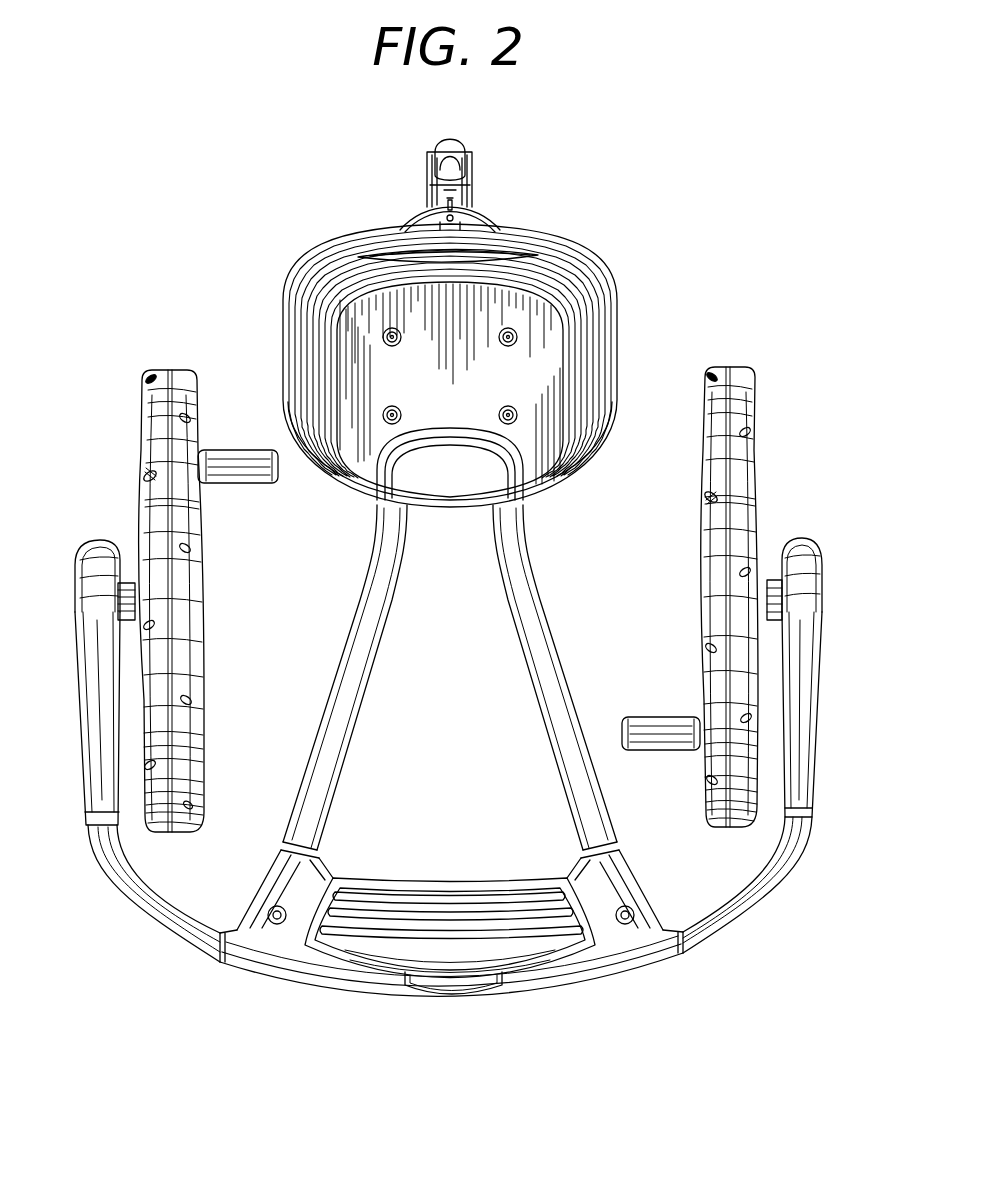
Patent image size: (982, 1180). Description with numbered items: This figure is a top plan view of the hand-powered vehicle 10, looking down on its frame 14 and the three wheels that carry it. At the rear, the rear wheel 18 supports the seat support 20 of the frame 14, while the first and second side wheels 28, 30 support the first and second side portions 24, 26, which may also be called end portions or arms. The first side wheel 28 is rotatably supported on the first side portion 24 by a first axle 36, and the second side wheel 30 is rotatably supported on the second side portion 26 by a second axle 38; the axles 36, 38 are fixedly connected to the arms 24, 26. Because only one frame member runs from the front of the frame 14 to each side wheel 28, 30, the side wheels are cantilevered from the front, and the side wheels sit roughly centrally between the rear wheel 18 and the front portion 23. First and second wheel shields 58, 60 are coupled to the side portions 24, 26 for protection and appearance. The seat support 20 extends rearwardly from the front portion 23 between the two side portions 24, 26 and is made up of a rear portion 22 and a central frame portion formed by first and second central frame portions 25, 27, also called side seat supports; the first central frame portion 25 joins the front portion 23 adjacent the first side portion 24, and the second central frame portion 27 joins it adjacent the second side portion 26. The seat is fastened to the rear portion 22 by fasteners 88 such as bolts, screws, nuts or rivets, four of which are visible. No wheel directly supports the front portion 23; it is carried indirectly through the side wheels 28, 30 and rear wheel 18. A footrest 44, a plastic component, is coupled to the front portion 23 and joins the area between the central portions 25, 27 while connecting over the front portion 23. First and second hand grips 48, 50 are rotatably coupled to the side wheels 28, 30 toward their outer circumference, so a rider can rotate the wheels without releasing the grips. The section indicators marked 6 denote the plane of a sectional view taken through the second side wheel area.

The hand-powered vehicle 10 is at (314, 168).
The frame 14 is at (767, 914).
The rear wheel 18 is at (458, 138).
The seat support 20 is at (450, 681).
The rear portion 22 is at (483, 209).
The front portion 23 is at (318, 986).
The first side portion 24 is at (80, 600).
The first central frame portion 25 is at (330, 766).
The second side portion 26 is at (825, 591).
The second central frame portion 27 is at (573, 782).
The first side wheel 28 is at (172, 369).
The second side wheel 30 is at (722, 366).
The first axle 36 is at (128, 582).
The second axle 38 is at (773, 579).
The footrest 44 is at (518, 938).
The first hand grip 48 is at (258, 449).
The second hand grip 50 is at (663, 717).
The first wheel shield 58 is at (93, 697).
The second wheel shield 60 is at (812, 714).
The fasteners 88 is at (507, 347).
The section line 6- 6 is at (692, 597).